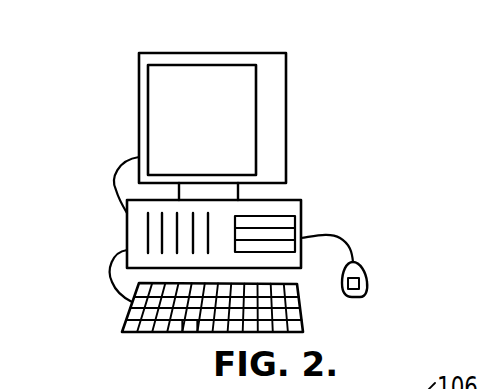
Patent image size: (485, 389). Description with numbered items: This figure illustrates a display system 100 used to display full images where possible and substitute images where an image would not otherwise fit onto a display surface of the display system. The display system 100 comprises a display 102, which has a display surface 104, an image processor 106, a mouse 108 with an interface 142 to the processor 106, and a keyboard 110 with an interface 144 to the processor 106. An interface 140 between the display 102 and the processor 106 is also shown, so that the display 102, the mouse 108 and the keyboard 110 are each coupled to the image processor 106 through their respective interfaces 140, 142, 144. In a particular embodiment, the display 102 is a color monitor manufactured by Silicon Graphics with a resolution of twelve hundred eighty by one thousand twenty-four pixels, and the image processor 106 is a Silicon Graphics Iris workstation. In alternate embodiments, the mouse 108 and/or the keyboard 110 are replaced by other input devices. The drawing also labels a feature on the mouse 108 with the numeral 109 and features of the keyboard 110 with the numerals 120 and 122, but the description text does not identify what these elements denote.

The display system 100 is at (378, 62).
The display 102 is at (158, 53).
The display surface 104 is at (157, 77).
The image processor 106 is at (301, 197).
The mouse 108 is at (389, 283).
The mouse button 109 is at (362, 289).
The keyboard 110 is at (243, 331).
The keys 120 is at (168, 325).
The key 122 is at (203, 325).
The interface 140 is at (116, 184).
The interface 142 is at (343, 234).
The interface 144 is at (112, 281).